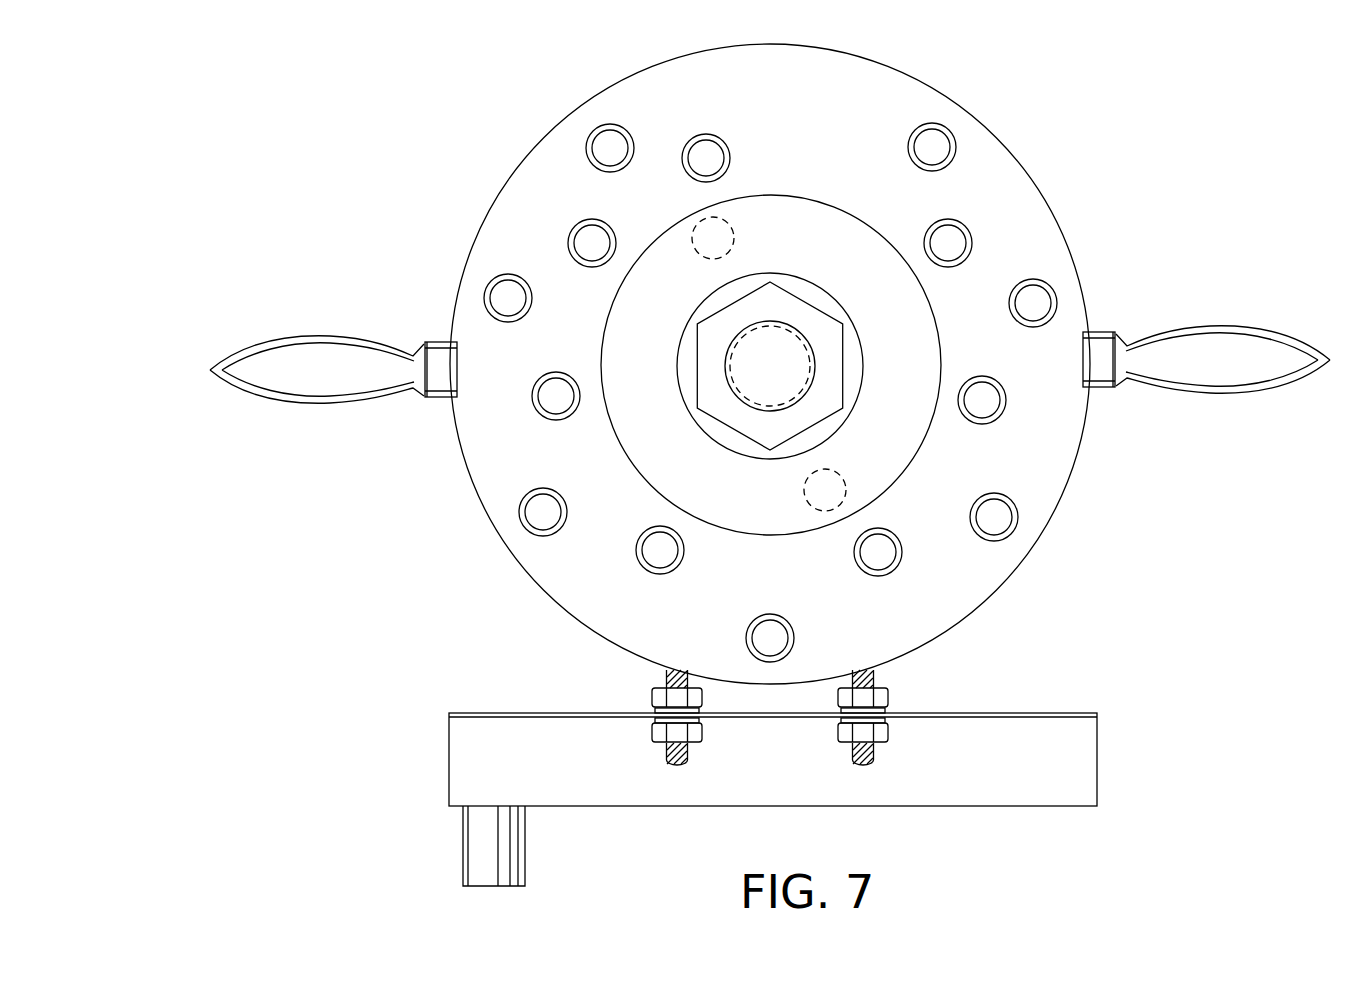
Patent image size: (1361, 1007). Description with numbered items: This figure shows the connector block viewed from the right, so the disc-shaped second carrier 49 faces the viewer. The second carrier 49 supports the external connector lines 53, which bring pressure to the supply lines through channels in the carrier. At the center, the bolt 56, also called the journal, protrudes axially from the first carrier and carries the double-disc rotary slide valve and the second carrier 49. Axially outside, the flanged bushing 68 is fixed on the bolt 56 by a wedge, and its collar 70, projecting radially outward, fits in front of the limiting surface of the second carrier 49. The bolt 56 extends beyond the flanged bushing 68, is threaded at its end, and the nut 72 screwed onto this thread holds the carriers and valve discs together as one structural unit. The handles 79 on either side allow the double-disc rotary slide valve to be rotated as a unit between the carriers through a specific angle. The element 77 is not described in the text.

The second carrier 49 is at (1028, 223).
The external connector lines 53 is at (995, 518).
The bolt 56 is at (782, 362).
The flanged bushing 68 is at (763, 182).
The collar 70 is at (835, 246).
The nut 72 is at (717, 353).
The base plate 77 is at (1077, 752).
The handles 79 is at (300, 335).